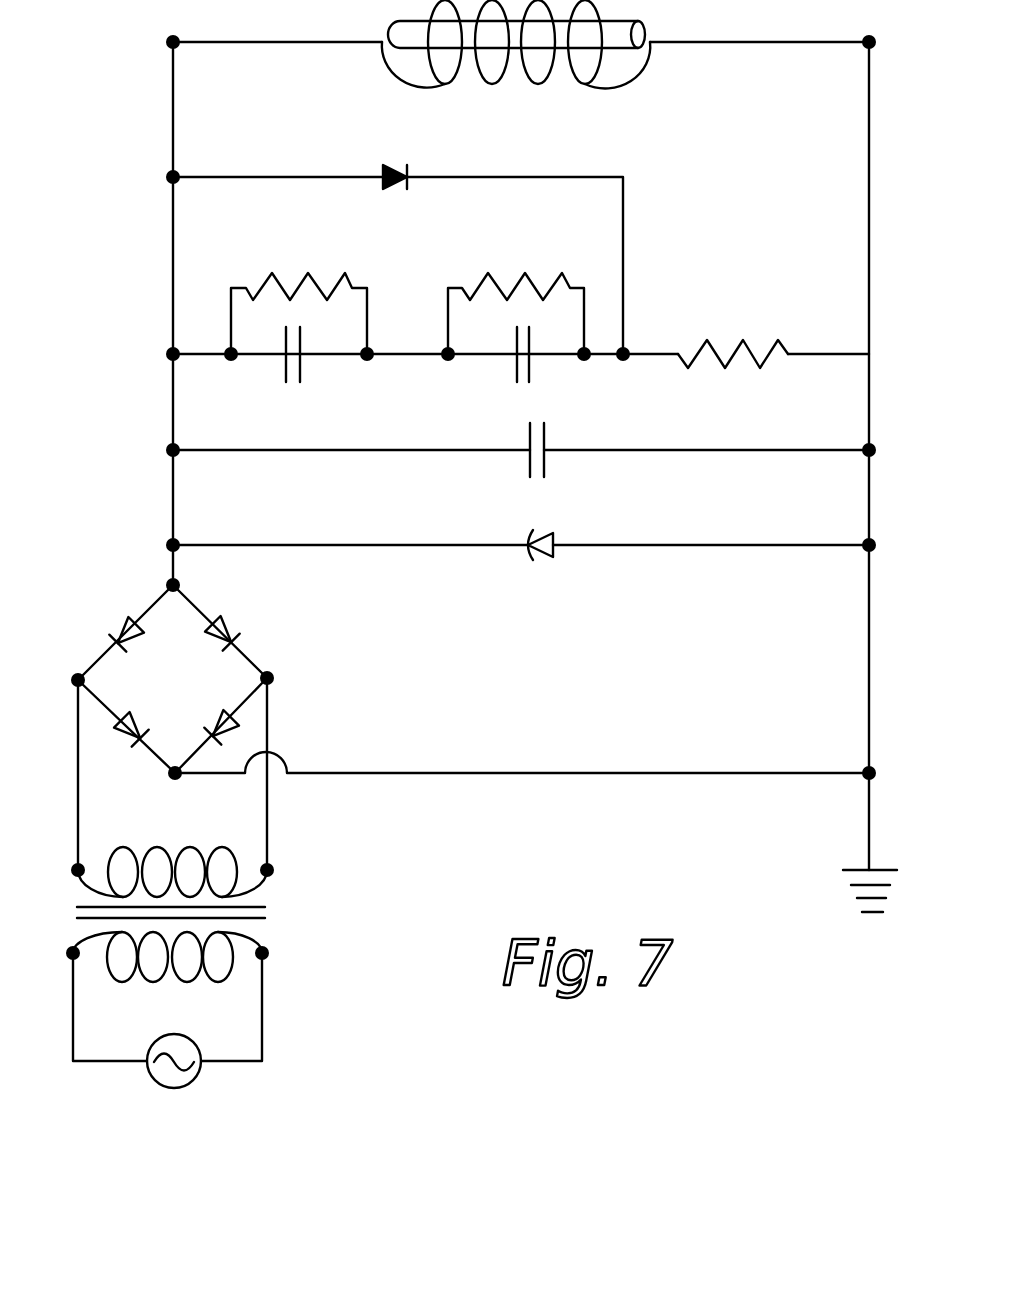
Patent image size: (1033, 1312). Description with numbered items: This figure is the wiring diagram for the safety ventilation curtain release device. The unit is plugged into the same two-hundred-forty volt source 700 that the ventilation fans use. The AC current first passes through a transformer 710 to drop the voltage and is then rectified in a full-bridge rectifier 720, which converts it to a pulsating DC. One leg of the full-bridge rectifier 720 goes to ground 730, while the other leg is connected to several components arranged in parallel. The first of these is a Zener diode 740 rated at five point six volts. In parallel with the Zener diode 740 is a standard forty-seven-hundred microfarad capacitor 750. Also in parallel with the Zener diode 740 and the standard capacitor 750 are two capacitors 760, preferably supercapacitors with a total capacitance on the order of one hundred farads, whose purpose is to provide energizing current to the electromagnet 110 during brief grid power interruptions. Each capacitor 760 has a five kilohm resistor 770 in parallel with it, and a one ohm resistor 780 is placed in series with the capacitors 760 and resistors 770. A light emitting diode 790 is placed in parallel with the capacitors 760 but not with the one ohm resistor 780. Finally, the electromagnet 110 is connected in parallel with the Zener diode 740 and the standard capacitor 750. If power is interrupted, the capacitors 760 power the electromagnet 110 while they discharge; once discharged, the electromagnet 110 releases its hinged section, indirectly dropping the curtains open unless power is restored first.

The electromagnet 110 is at (666, 66).
The 240 volt source 700 is at (185, 1040).
The transformer 710 is at (301, 912).
The full-bridge rectifier 720 is at (200, 696).
The ground 730 is at (852, 885).
The Zener diode 740 is at (543, 556).
The standard capacitor 750 is at (520, 456).
The capacitors 760 is at (277, 363).
The resistor 770 is at (500, 273).
The resistor 780 is at (732, 340).
The Light Emitting Diode (LED) 790 is at (395, 168).